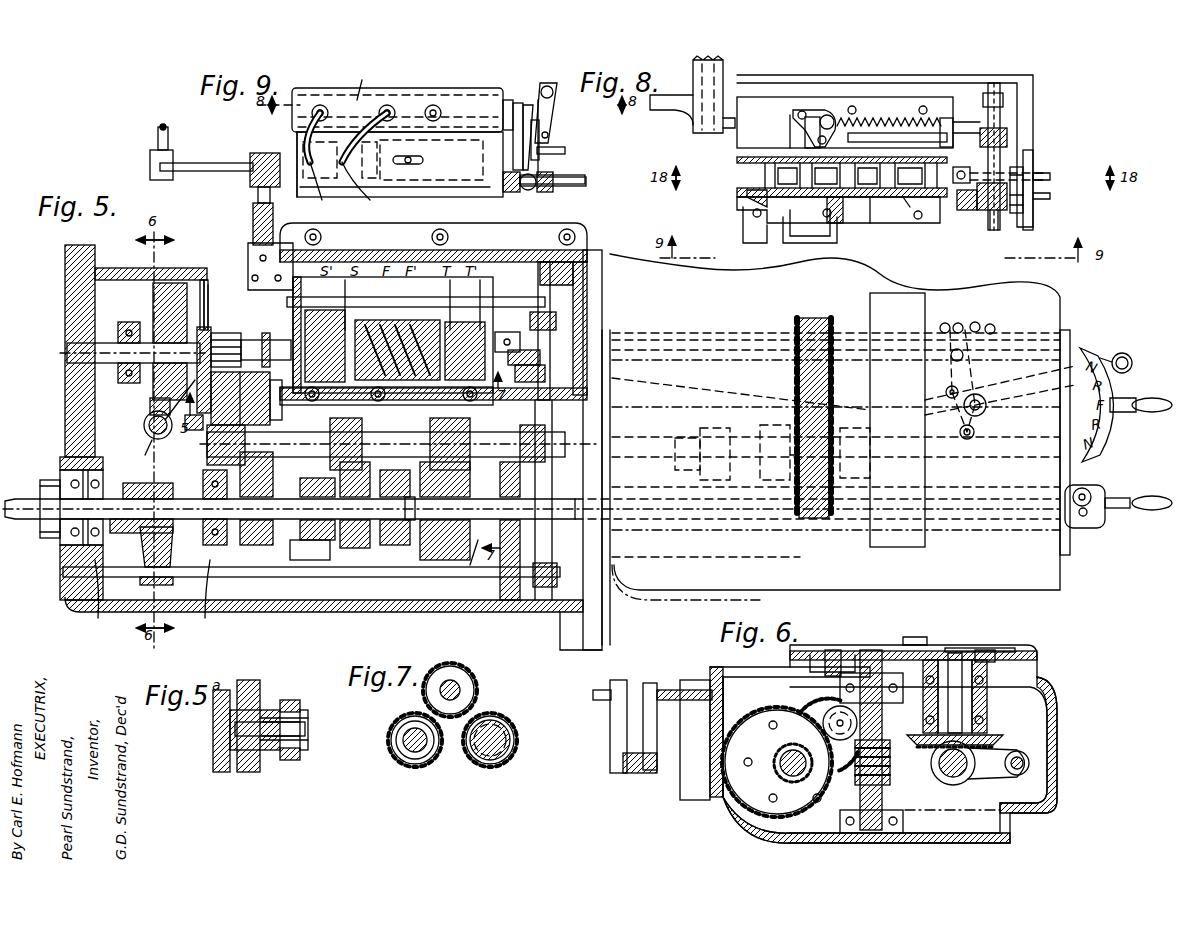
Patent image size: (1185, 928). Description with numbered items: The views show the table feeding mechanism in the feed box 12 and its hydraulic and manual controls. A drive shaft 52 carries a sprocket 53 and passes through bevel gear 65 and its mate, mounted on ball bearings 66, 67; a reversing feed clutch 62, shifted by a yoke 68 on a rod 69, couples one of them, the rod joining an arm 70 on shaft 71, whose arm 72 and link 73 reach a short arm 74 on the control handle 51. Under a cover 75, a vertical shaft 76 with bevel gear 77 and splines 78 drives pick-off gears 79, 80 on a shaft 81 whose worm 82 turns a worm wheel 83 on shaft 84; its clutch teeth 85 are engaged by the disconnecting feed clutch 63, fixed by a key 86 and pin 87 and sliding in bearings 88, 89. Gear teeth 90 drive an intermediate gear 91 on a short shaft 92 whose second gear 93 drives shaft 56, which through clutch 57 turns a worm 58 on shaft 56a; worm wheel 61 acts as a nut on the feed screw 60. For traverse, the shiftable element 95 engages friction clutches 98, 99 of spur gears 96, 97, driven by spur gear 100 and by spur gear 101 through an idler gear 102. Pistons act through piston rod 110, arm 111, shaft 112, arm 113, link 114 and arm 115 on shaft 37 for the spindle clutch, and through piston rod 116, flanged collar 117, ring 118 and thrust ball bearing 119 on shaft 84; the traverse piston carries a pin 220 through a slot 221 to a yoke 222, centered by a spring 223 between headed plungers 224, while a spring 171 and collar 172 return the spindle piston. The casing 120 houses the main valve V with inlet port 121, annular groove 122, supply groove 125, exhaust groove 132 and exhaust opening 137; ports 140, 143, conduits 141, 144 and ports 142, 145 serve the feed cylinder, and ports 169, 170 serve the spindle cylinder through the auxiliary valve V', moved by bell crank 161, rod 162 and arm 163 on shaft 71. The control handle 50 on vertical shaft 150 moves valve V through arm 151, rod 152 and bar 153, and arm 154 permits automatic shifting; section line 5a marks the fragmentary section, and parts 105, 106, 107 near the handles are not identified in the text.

In FIG. 5, the section line 5a is at (237, 445).
In FIG. 5, the feed box 12 is at (345, 608).
In FIG. 6, the feed box 12 is at (1057, 742).
In FIG. 5, the shaft 37 is at (167, 130).
In FIG. 6, the shaft 37 is at (602, 690).
In FIG. 5, the manual control handle 50 is at (1130, 356).
In FIG. 5, the control handle 51 is at (1152, 398).
In FIG. 5, the drive shaft 52 is at (120, 500).
In FIG. 5, the sprocket 53 is at (42, 535).
In FIG. 5, the shaft 56 is at (400, 444).
In FIG. 7, the shaft 56 is at (517, 748).
In FIG. 5, the shaft 56a is at (742, 470).
In FIG. 5, the clutch 57 is at (708, 480).
In FIG. 5, the worm 58 is at (785, 470).
In FIG. 5, the feed screw 60 is at (822, 326).
In FIG. 5, the worm wheel 61 is at (135, 532).
In FIG. 5, the reversing feed clutch 62 is at (172, 540).
In FIG. 5, the disconnecting feed clutch 63 is at (200, 330).
In FIG. 5, the bevel gear 65 is at (210, 526).
In FIG. 5, the ball bearing 66 is at (97, 596).
In FIG. 5, the ball bearing 67 is at (201, 599).
In FIG. 5, the yoke 68 is at (150, 548).
In FIG. 5, the rod 69 is at (378, 575).
In FIG. 5, the arm 70 is at (556, 565).
In FIG. 5, the shaft 71 is at (552, 512).
In FIG. 9, the shaft 71 is at (556, 103).
In FIG. 8, the shaft 71 is at (990, 232).
In FIG. 5, the arm 72 is at (585, 385).
In FIG. 9, the arm 72 is at (560, 108).
In FIG. 8, the arm 72 is at (1002, 228).
In FIG. 5, the link 73 is at (740, 392).
In FIG. 9, the link 73 is at (572, 186).
In FIG. 8, the link 73 is at (1050, 196).
In FIG. 5, the short arm 74 is at (978, 440).
In FIG. 6, the cover 75 is at (1040, 660).
In FIG. 6, the vertical shaft 76 is at (985, 655).
In FIG. 6, the bevel gear 77 is at (1000, 740).
In FIG. 6, the splines 78 is at (958, 690).
In FIG. 6, the pick-off gear 79 is at (938, 660).
In FIG. 6, the pick-off gear 80 is at (836, 660).
In FIG. 5, the shaft 81 is at (162, 438).
In FIG. 6, the shaft 81 is at (874, 660).
In FIG. 5, the worm 82 is at (145, 430).
In FIG. 6, the worm 82 is at (932, 770).
In FIG. 5, the worm wheel 83 is at (150, 406).
In FIG. 6, the worm wheel 83 is at (760, 790).
In FIG. 5, the shaft 84 is at (95, 345).
In FIG. 6, the shaft 84 is at (765, 815).
In FIG. 5, the clutch teeth 85 is at (173, 340).
In FIG. 5, the key 86 is at (203, 280).
In FIG. 5, the pin 87 is at (210, 292).
In FIG. 5, the bearing 88 is at (105, 365).
In FIG. 5, the bearing 89 is at (222, 318).
In FIG. 5, the gear teeth 90 is at (226, 350).
In FIG. 6, the gear teeth 90 is at (822, 718).
In FIG. 5, the intermediate gear 91 is at (139, 451).
In FIG. 6, the intermediate gear 91 is at (818, 658).
In FIG. 5A, the intermediate gear 91 is at (213, 748).
In FIG. 5, the short shaft 92 is at (194, 428).
In FIG. 6, the short shaft 92 is at (842, 760).
In FIG. 5A, the short shaft 92 is at (268, 750).
In FIG. 5, the second gear 93 is at (240, 398).
In FIG. 5A, the second gear 93 is at (292, 702).
In FIG. 5, the shiftable element 95 is at (392, 500).
In FIG. 5, the spur gear 96 is at (330, 520).
In FIG. 5, the spur gear 97 is at (445, 540).
In FIG. 5, the friction clutch 98 is at (357, 505).
In FIG. 5, the friction clutch 99 is at (445, 500).
In FIG. 5, the spur gear 100 is at (318, 540).
In FIG. 5, the spur gear 101 is at (468, 568).
In FIG. 7, the spur gear 101 is at (415, 755).
In FIG. 7, the intermediate idler gear 102 is at (465, 675).
In FIG. 5, the cover plate 105 is at (890, 490).
In FIG. 5, the bracket 106 is at (1075, 530).
In FIG. 5, the handle 107 is at (1118, 508).
In FIG. 5, the piston rod 110 is at (416, 295).
In FIG. 5, the arm 111 is at (277, 250).
In FIG. 5, the shaft 112 is at (253, 208).
In FIG. 6, the shaft 112 is at (678, 688).
In FIG. 5, the arm 113 is at (250, 172).
In FIG. 6, the arm 113 is at (652, 738).
In FIG. 5, the link 114 is at (210, 164).
In FIG. 6, the link 114 is at (636, 774).
In FIG. 5, the arm 115 is at (170, 152).
In FIG. 6, the arm 115 is at (620, 734).
In FIG. 5, the piston rod 116 is at (322, 344).
In FIG. 5, the flanged collar 117 is at (255, 340).
In FIG. 5, the ring 118 is at (263, 345).
In FIG. 5, the thrust ball bearing 119 is at (289, 400).
In FIG. 9, the casing 120 is at (430, 100).
In FIG. 9, the inlet port 121 is at (508, 100).
In FIG. 8, the inlet port 121 is at (878, 222).
In FIG. 8, the annular groove 122 is at (842, 153).
In FIG. 8, the annular groove 125 is at (960, 170).
In FIG. 8, the exhaust groove 132 is at (880, 140).
In FIG. 8, the exhaust opening 137 is at (760, 175).
In FIG. 9, the port 140 is at (388, 104).
In FIG. 8, the port 140 is at (848, 225).
In FIG. 9, the conduit 141 is at (372, 148).
In FIG. 8, the conduit 141 is at (812, 243).
In FIG. 9, the port 142 is at (369, 191).
In FIG. 9, the port 143 is at (324, 104).
In FIG. 8, the port 143 is at (745, 200).
In FIG. 9, the conduit 144 is at (297, 140).
In FIG. 8, the conduit 144 is at (745, 235).
In FIG. 5, the port 145 is at (345, 378).
In FIG. 9, the port 145 is at (329, 191).
In FIG. 5, the vertical shaft 150 is at (980, 398).
In FIG. 5, the arm 151 is at (946, 384).
In FIG. 5, the rod 152 is at (706, 352).
In FIG. 9, the rod 152 is at (570, 154).
In FIG. 8, the rod 152 is at (1050, 178).
In FIG. 9, the bar 153 is at (530, 100).
In FIG. 5, the radially extending arm 154 is at (962, 438).
In FIG. 8, the bell crank 161 is at (818, 108).
In FIG. 8, the rod 162 is at (915, 140).
In FIG. 5, the arm 163 is at (556, 318).
In FIG. 9, the arm 163 is at (555, 130).
In FIG. 8, the arm 163 is at (1007, 135).
In FIG. 5, the port 169 is at (400, 300).
In FIG. 5, the port 170 is at (340, 300).
In FIG. 5, the spring 171 is at (470, 300).
In FIG. 5, the collar 172 is at (500, 300).
In FIG. 5, the pin 220 is at (450, 444).
In FIG. 9, the pin 220 is at (412, 164).
In FIG. 5, the slot 221 is at (354, 444).
In FIG. 5, the yoke 222 is at (413, 526).
In FIG. 5, the spring 223 is at (409, 361).
In FIG. 5, the headed plungers 224 is at (520, 345).
In FIG. 9, the main valve V is at (514, 117).
In FIG. 8, the main valve V is at (913, 226).
In FIG. 9, the auxiliary valve V' is at (363, 81).
In FIG. 8, the auxiliary valve V' is at (776, 127).